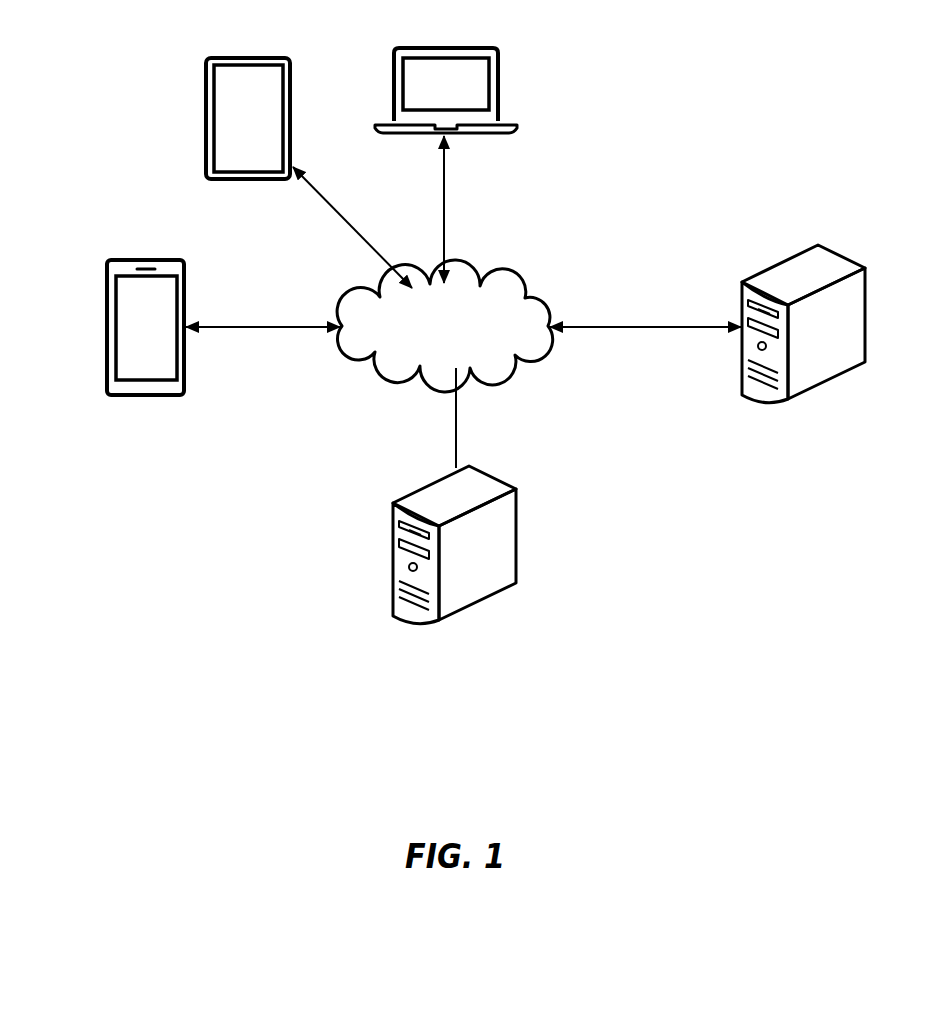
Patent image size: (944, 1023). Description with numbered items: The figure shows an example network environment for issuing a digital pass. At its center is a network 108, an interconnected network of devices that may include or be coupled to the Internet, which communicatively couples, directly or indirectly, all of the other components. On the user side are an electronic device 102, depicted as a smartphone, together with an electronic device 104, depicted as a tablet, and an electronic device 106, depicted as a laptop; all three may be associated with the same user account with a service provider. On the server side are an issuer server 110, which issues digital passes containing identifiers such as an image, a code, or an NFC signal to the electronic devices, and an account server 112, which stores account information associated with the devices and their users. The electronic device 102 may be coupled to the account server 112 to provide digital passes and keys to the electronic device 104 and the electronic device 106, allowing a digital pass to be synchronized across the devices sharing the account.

The electronic device 102 is at (107, 278).
The electronic device 104 is at (206, 80).
The electronic device 106 is at (394, 63).
The network 108 is at (473, 367).
The issuer server 110 is at (753, 273).
The account server 112 is at (482, 603).